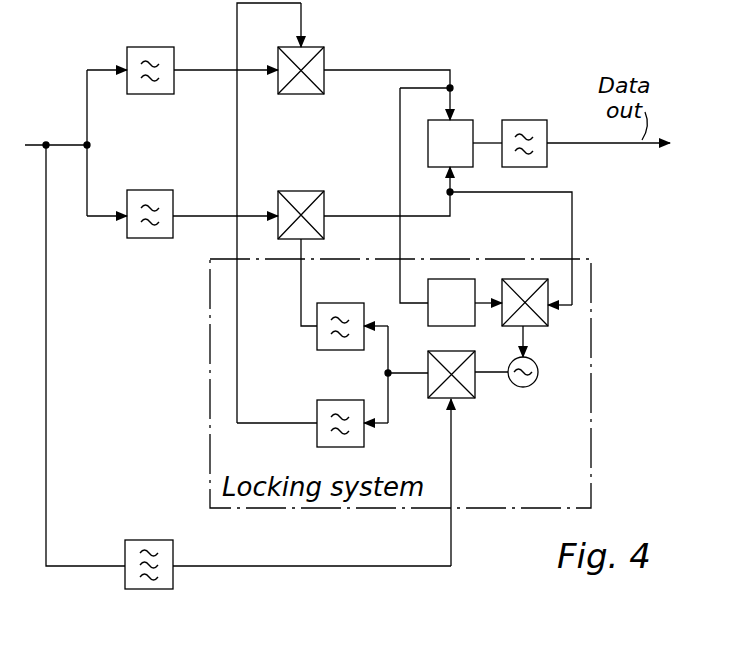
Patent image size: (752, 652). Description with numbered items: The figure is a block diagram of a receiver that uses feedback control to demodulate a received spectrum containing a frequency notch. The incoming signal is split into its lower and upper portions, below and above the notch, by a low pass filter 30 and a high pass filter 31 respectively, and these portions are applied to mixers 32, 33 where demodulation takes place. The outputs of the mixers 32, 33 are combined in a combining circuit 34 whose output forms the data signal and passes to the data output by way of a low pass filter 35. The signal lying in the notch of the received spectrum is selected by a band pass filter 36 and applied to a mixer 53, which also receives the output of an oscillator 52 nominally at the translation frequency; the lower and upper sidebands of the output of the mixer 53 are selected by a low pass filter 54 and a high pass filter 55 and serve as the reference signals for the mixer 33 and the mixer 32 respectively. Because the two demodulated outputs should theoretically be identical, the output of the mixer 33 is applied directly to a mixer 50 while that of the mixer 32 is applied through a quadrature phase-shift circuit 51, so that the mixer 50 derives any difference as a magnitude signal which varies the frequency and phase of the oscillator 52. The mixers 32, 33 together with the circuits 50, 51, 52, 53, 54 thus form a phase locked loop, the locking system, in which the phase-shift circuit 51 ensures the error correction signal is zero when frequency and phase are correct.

The low pass filter 30 is at (150, 47).
The high pass filter 31 is at (150, 190).
The mixer 32 is at (326, 53).
The mixer 33 is at (303, 191).
The combining circuit 34 is at (468, 120).
The low pass filter 35 is at (525, 120).
The band pass filter 36 is at (146, 540).
The mixer 50 is at (525, 279).
The quadrature phase-shift circuit 51 is at (450, 279).
The oscillator 52 is at (518, 388).
The mixer 53 is at (437, 398).
The low pass filter 54 is at (345, 400).
The high pass filter 55 is at (350, 290).